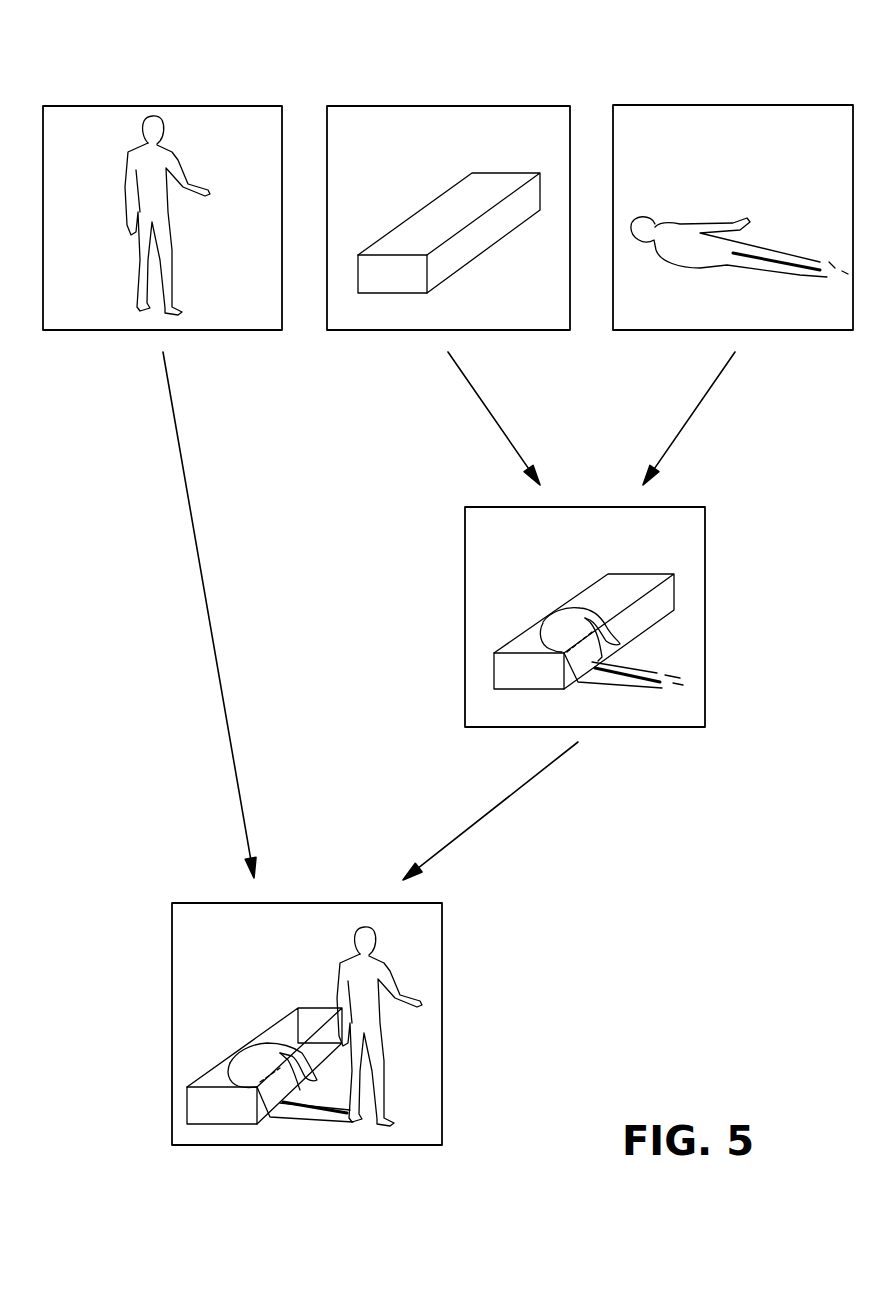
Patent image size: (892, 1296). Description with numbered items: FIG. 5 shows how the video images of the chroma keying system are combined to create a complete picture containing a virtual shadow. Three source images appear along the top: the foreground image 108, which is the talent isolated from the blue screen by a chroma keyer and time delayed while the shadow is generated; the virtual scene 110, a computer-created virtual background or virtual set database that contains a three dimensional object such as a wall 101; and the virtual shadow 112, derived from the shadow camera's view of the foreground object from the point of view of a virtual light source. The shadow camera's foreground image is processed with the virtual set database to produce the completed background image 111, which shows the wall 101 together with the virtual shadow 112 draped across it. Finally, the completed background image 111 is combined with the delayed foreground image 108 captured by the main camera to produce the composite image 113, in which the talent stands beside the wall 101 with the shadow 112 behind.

The wall 101 is at (448, 200).
The foreground image 108 is at (232, 91).
The virtual scene 110 is at (511, 91).
The completed background image 111 is at (450, 545).
The virtual shadow 112 is at (689, 230).
The composite image 113 is at (157, 964).